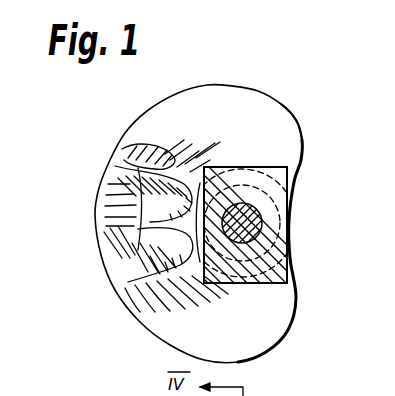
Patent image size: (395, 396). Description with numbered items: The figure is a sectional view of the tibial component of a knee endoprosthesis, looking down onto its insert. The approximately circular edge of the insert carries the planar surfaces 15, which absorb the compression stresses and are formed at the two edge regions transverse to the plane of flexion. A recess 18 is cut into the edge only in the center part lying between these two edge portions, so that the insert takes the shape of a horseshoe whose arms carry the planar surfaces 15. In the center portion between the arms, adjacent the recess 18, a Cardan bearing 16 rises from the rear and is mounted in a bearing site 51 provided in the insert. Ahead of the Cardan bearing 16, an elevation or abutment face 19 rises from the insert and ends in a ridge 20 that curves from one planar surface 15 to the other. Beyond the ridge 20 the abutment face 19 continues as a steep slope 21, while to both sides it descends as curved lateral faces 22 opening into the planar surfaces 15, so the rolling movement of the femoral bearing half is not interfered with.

The planar surfaces 15 is at (253, 101).
The Cardan bearing 16 is at (294, 187).
The recess 18 is at (295, 230).
The abutment face 19 is at (148, 227).
The ridge 20 is at (132, 203).
The slope 21 is at (105, 215).
The lateral faces 22 is at (172, 156).
The bearing site 51 is at (291, 270).